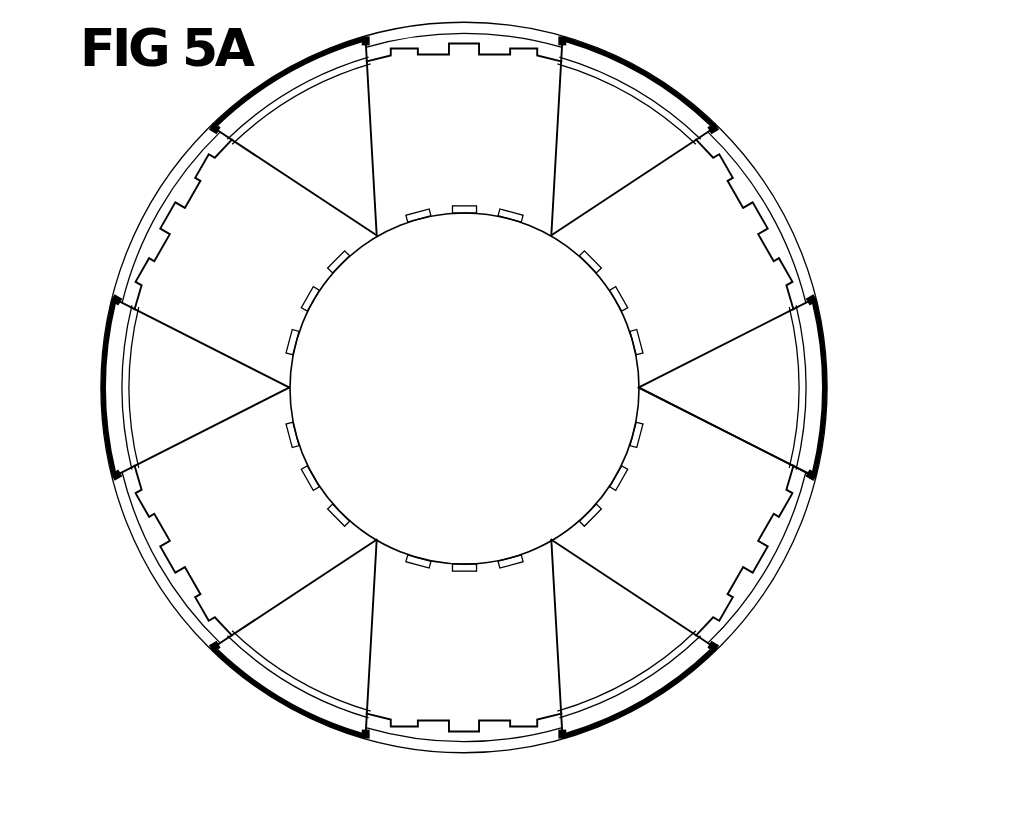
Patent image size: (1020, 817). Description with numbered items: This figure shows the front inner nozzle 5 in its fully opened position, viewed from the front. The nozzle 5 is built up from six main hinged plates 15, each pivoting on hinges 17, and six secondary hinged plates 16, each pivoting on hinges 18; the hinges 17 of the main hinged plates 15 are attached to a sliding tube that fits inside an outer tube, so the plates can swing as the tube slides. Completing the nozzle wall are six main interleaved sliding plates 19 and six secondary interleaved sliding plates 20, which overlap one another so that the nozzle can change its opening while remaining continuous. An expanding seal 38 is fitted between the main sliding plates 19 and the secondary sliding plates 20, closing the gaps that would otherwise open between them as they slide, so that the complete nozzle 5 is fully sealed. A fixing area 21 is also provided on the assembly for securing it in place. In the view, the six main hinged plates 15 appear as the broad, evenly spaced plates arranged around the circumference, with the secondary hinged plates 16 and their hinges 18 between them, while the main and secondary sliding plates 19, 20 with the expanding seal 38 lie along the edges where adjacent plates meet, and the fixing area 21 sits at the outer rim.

The nozzle 5 is at (500, 131).
The main hinged plates 15 is at (252, 247).
The secondary hinged plates 16 is at (143, 244).
The hinges 17 is at (307, 478).
The hinges 18 is at (185, 580).
The main interleaved sliding plates 19 is at (585, 618).
The secondary interleaved sliding plates 20 is at (827, 400).
The fixing area 21 is at (783, 208).
The expanding seal 38 is at (811, 470).